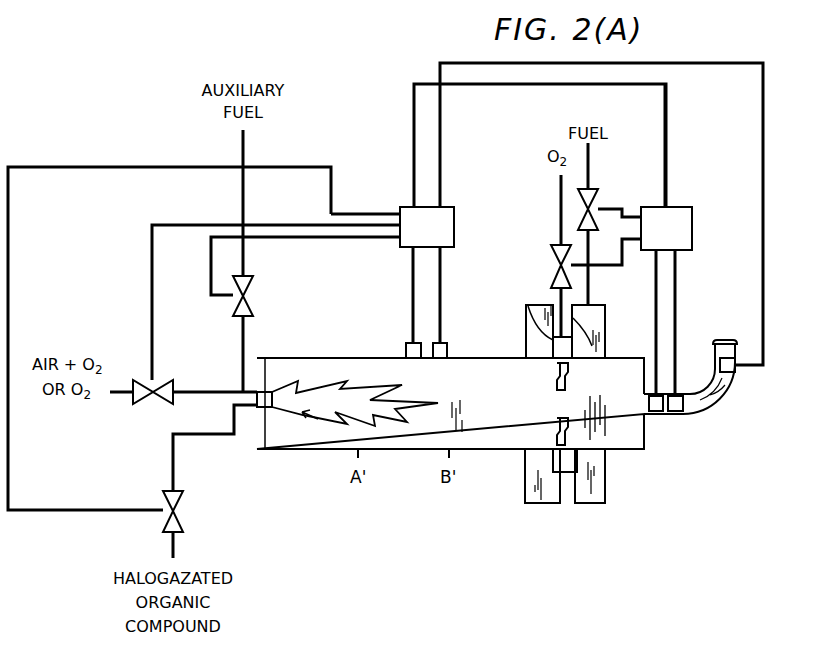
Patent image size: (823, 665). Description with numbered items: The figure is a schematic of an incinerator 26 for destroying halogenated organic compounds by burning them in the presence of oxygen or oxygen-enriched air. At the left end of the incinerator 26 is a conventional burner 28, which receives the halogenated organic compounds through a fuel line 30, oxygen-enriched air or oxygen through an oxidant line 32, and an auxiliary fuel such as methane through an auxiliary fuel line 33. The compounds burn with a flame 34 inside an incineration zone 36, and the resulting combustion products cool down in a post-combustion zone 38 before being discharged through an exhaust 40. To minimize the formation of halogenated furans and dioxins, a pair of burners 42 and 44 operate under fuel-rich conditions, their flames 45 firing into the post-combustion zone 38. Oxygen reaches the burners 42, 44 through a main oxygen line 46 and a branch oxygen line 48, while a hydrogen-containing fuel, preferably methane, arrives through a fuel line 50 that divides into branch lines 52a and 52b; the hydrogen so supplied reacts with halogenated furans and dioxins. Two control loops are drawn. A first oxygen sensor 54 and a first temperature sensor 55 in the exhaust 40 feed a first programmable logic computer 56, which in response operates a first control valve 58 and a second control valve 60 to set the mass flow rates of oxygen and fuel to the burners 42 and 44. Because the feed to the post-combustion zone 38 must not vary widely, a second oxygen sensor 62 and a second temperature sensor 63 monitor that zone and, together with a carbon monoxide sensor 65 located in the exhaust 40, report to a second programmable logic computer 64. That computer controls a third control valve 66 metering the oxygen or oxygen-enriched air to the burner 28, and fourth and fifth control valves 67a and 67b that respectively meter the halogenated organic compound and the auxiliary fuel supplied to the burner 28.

The incinerator 26 is at (298, 455).
The burner 28 is at (268, 450).
The fuel line 30 is at (226, 436).
The oxidant line 32 is at (200, 390).
The auxiliary fuel line 33 is at (248, 340).
The flame 34 is at (328, 402).
The incineration zone 36 is at (405, 430).
The post-combustion zone 38 is at (482, 428).
The exhaust 40 is at (716, 405).
The burner 42 is at (565, 462).
The burner 44 is at (528, 305).
The flames 45 is at (555, 378).
The main oxygen line 46 is at (572, 318).
The branch oxygen line 48 is at (526, 341).
The fuel line 50 is at (592, 283).
The branch line 52a is at (588, 352).
The branch line 52b is at (605, 480).
The first oxygen sensor 54 is at (656, 412).
The first temperature sensor 55 is at (678, 412).
The first programmable logic computer 56 is at (688, 205).
The first control valve 58 is at (550, 255).
The second control valve 60 is at (600, 195).
The second oxygen sensor 62 is at (406, 352).
The second temperature sensor 63 is at (448, 352).
The second programmable logic computer 64 is at (400, 207).
The carbon monoxide sensor 65 is at (735, 380).
The third control valve 66 is at (160, 385).
The fourth control valve 67a is at (183, 522).
The fifth control valve 67b is at (253, 298).